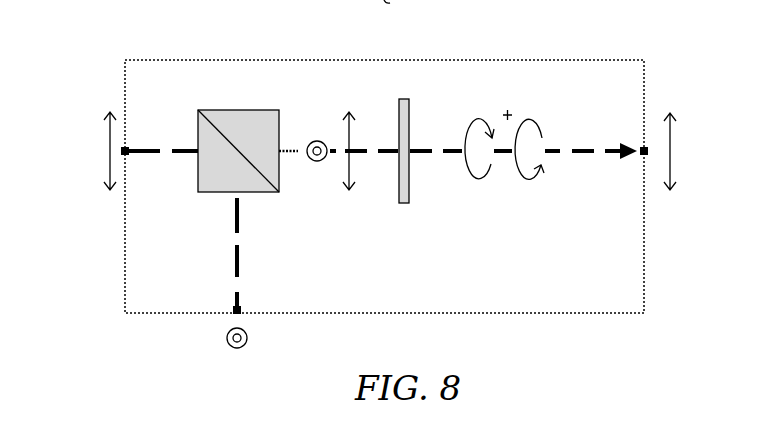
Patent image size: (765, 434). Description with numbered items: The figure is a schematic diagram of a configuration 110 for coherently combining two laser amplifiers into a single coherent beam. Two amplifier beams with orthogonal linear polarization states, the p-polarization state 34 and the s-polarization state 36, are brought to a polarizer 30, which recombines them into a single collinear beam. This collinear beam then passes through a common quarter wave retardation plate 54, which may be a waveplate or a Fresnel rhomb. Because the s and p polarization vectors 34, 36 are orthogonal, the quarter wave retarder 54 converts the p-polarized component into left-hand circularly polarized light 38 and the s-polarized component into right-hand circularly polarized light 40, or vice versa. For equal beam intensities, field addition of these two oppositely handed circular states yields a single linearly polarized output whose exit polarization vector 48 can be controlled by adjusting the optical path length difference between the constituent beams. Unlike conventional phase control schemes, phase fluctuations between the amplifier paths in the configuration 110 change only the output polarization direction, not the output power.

The polarizer 30 is at (196, 124).
The p-polarization state 34 is at (110, 143).
The s-polarization state 36 is at (316, 141).
The left-hand circularly polarized light 38 is at (477, 179).
The right-hand circularly polarized light 40 is at (530, 121).
The exit polarization vector 48 is at (672, 147).
The quarter wave retardation plate 54 is at (407, 203).
The configuration 110 is at (500, 60).